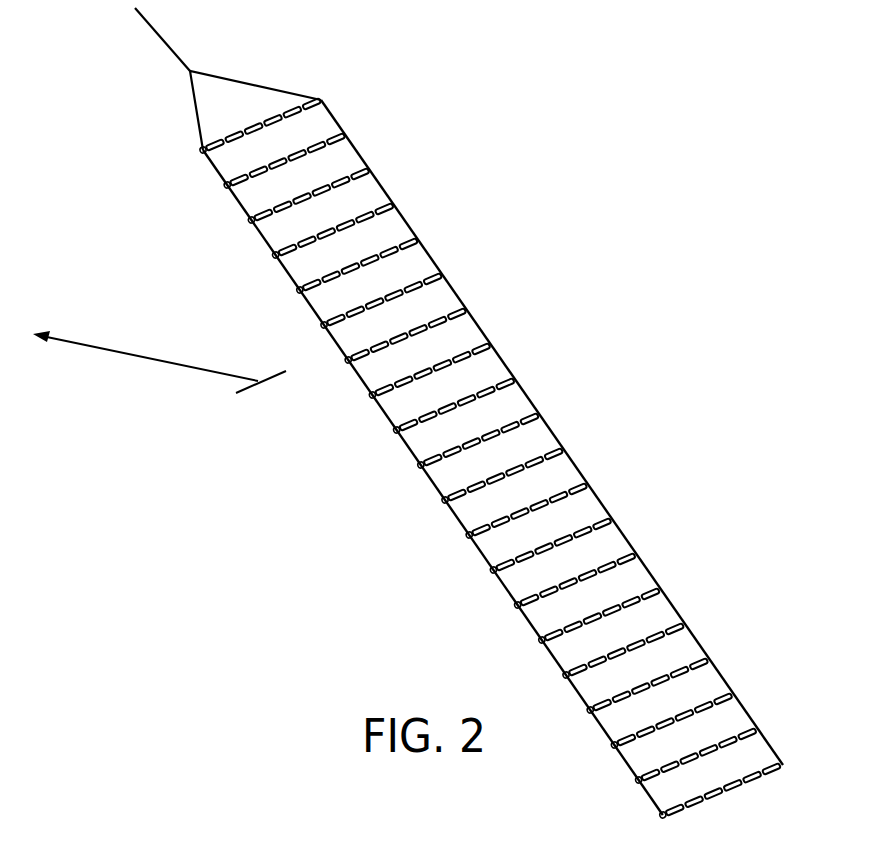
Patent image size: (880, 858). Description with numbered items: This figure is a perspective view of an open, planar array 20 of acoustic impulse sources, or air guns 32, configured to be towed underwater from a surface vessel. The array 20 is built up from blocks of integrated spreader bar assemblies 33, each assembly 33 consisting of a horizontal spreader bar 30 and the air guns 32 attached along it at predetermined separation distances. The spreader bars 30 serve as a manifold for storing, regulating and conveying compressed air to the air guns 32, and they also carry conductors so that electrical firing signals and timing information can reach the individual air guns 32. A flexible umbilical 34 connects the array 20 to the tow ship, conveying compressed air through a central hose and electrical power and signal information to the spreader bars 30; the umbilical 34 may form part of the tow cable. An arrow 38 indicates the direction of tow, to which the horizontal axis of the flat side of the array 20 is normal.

The array 20 is at (626, 279).
The spreader bar 30 is at (703, 648).
The air gun 32 is at (399, 283).
The integrated spreader bar assembly 33 is at (667, 669).
The umbilical 34 is at (173, 50).
The arrow 38 is at (173, 363).